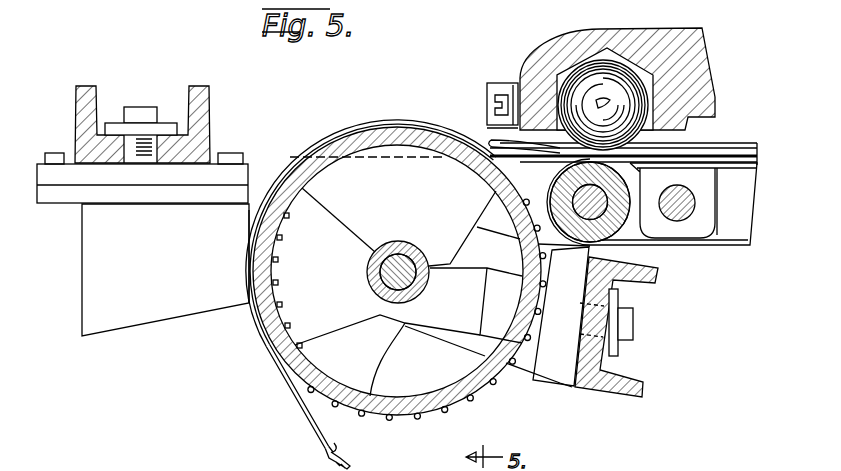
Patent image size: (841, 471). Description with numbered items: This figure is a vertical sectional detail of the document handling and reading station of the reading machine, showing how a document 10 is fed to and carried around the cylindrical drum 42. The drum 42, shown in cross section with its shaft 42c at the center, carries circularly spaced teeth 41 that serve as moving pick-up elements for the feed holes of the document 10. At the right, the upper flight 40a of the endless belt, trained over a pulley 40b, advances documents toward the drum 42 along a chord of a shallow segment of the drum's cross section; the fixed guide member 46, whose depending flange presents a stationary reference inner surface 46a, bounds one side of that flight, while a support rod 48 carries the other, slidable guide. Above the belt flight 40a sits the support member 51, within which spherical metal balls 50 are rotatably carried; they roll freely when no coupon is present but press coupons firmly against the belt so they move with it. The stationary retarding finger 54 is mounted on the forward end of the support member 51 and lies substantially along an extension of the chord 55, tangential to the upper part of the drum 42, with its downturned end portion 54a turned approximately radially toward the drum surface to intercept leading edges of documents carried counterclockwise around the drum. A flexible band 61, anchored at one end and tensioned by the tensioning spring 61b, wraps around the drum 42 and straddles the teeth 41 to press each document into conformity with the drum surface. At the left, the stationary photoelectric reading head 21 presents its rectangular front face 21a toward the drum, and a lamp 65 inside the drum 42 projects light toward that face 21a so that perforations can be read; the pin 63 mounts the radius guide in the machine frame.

The document 10 is at (696, 148).
The photoelectric reading head 21 is at (165, 252).
The front face 21a is at (258, 267).
The upper flight 40a is at (760, 164).
The pulley 40b is at (590, 168).
The teeth 41 is at (450, 411).
The cylindrical drum 42 is at (497, 390).
The shaft 42c is at (367, 288).
The guide member 46 is at (688, 148).
The inner surface 46a is at (735, 150).
The support rod 48 is at (684, 212).
The spherical metal balls 50 is at (603, 105).
The support member 51 is at (558, 48).
The retarding finger 54 is at (478, 130).
The downturned end portion 54a is at (446, 131).
The chord 55 is at (408, 158).
The flexible band 61 is at (402, 122).
The tensioning spring 61b is at (347, 463).
The pin 63 is at (444, 224).
The lamp 65 is at (338, 238).